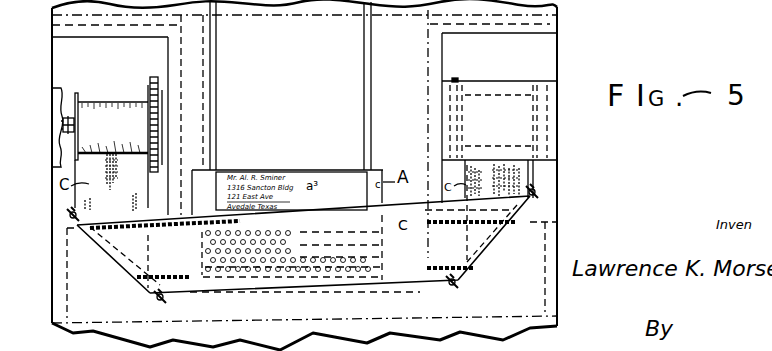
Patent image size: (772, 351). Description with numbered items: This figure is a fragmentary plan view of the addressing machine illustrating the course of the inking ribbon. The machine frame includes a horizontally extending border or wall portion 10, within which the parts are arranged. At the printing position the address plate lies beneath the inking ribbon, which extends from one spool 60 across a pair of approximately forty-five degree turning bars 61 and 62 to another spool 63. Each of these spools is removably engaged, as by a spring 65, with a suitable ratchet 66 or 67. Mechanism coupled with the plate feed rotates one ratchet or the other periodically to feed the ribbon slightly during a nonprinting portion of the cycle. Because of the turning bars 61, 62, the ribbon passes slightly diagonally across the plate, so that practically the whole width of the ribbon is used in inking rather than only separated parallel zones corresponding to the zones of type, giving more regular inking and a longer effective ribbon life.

The border or wall portion 10 is at (557, 24).
The spool 60 is at (79, 97).
The turning bar 61 is at (162, 301).
The turning bar 62 is at (455, 285).
The spool 63 is at (527, 88).
The spring 65 is at (75, 127).
The ratchet 66 is at (154, 77).
The ratchet 67 is at (458, 78).